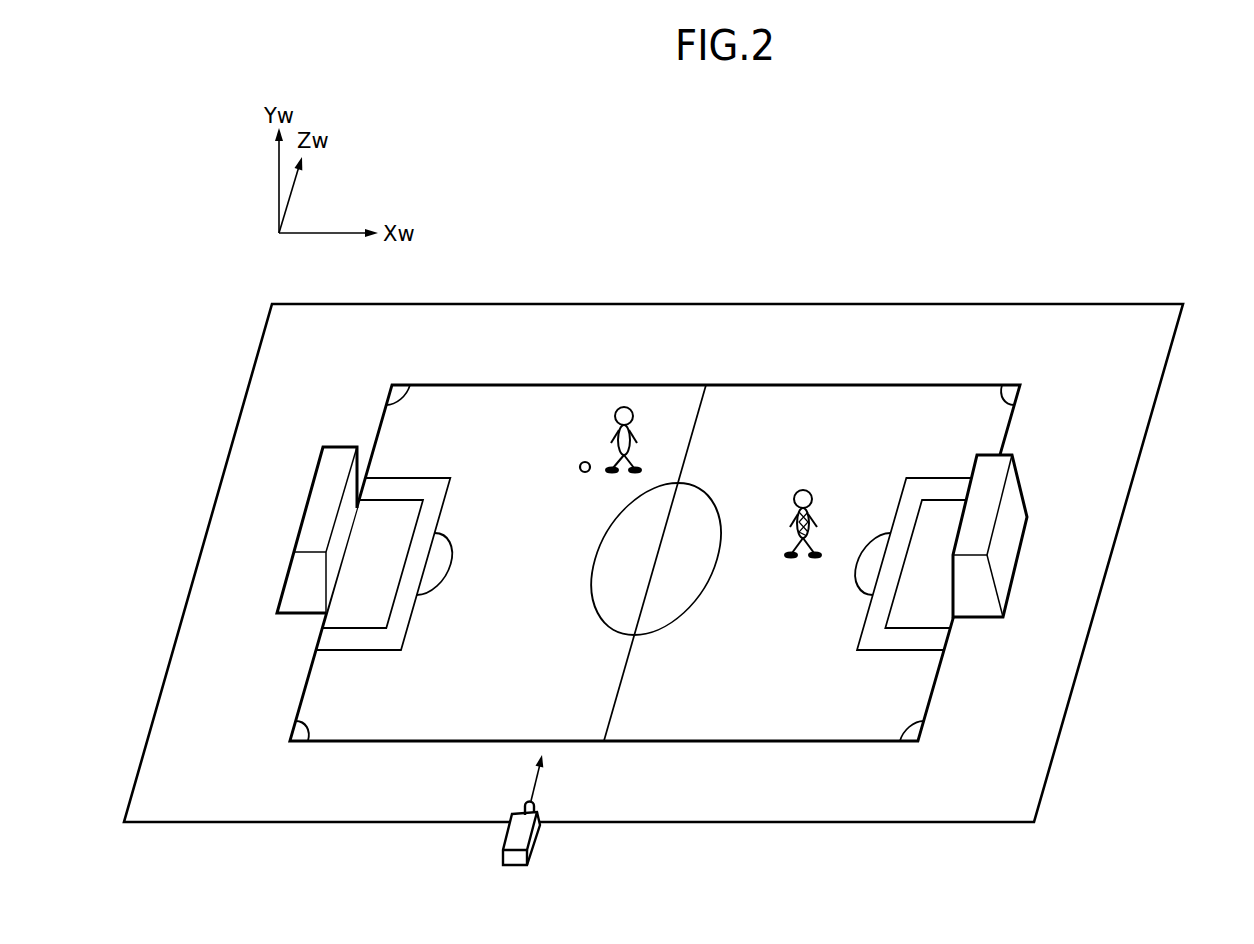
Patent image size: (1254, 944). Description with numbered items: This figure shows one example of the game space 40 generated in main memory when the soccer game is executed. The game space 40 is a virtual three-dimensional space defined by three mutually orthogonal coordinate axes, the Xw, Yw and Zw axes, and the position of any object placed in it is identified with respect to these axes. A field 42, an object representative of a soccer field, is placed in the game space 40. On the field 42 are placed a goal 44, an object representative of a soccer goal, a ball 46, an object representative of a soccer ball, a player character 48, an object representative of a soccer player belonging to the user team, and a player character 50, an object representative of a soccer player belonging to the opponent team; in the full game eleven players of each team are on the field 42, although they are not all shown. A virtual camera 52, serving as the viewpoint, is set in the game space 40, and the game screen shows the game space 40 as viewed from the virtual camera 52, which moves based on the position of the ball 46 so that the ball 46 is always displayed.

The game space 40 is at (709, 214).
The field 42 is at (865, 322).
The goal 44 is at (285, 579).
The ball 46 is at (578, 467).
The player character 48 is at (614, 416).
The player character 50 is at (805, 488).
The virtual camera 52 is at (540, 837).